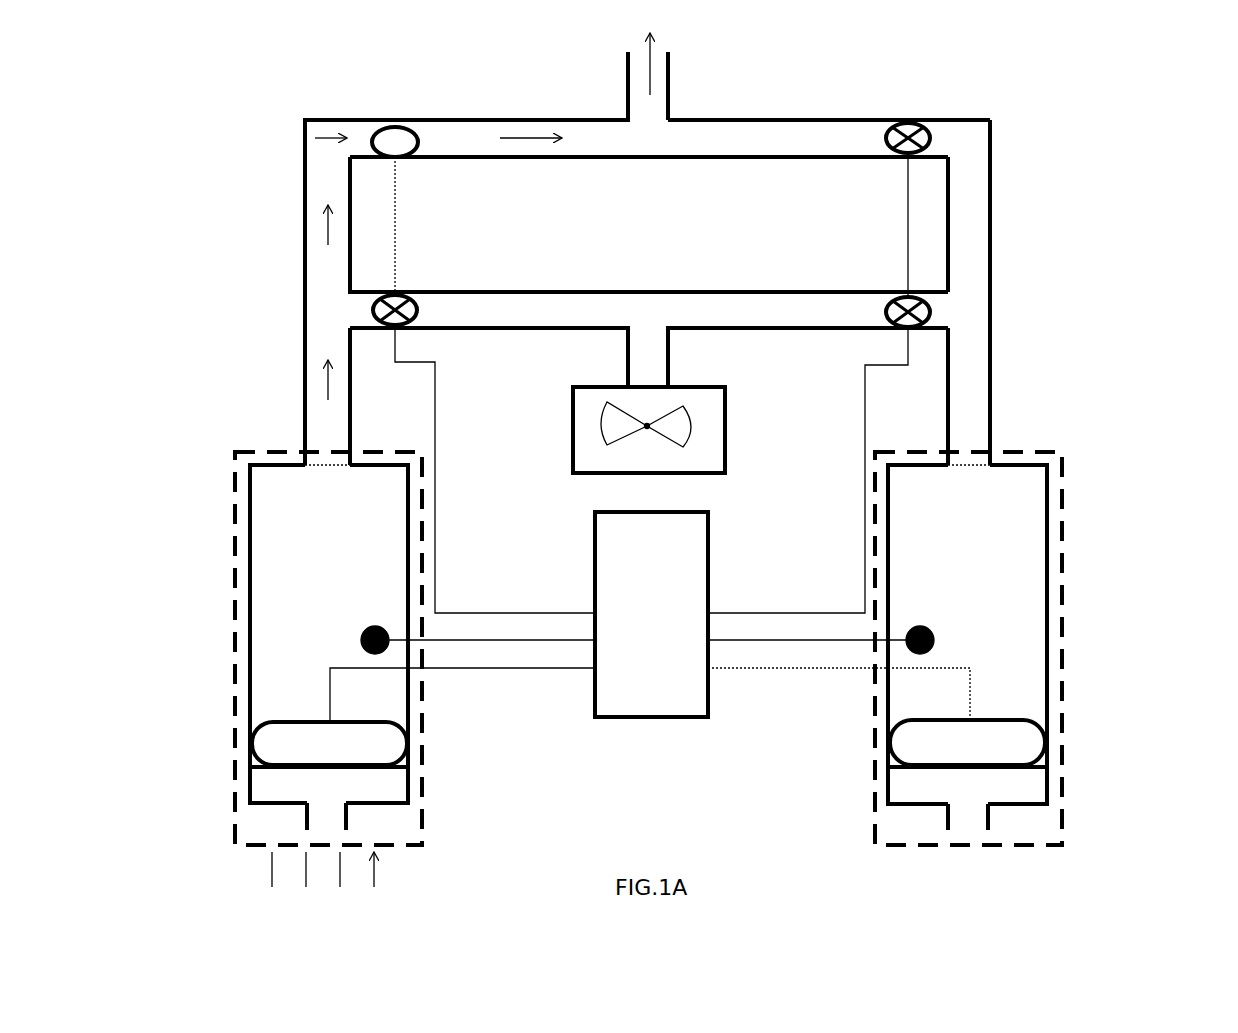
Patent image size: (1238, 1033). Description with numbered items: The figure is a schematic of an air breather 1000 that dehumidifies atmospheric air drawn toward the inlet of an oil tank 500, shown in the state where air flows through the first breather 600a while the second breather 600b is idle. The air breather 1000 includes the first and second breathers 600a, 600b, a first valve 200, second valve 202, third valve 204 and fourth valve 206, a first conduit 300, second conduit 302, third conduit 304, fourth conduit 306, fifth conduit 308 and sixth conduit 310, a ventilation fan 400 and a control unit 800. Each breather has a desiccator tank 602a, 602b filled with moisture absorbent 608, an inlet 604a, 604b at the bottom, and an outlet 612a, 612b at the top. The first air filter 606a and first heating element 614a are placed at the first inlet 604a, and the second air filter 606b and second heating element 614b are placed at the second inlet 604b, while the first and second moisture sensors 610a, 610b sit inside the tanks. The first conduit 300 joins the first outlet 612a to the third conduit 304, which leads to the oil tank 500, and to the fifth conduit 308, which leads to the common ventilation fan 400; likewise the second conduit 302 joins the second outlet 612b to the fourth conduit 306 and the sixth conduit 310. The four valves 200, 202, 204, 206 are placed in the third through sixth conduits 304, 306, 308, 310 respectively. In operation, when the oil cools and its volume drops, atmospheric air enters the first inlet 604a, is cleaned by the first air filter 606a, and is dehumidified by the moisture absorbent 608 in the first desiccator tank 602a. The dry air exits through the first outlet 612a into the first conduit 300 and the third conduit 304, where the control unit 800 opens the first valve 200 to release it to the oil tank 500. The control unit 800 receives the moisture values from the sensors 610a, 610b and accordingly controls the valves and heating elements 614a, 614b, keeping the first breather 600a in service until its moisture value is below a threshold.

The air breather 1000 is at (1099, 92).
The first valve 200 is at (368, 138).
The second valve 202 is at (935, 138).
The third valve 204 is at (418, 312).
The fourth valve 206 is at (885, 312).
The first conduit 300 is at (305, 283).
The second conduit 302 is at (992, 262).
The third conduit 304 is at (528, 118).
The fourth conduit 306 is at (783, 120).
The fifth conduit 308 is at (478, 292).
The sixth conduit 310 is at (795, 292).
The ventilation fan 400 is at (573, 397).
The oil tank 500 is at (670, 62).
The first breather 600a is at (235, 492).
The second breather 600b is at (1062, 472).
The first desiccator tank 602a is at (250, 583).
The second desiccator tank 602b is at (1050, 612).
The first inlet 604a is at (305, 818).
The second inlet 604b is at (990, 820).
The first air filter 606a is at (285, 790).
The second air filter 606b is at (1045, 803).
The moisture absorbent 608 is at (290, 654).
The first moisture sensor 610a is at (360, 640).
The second moisture sensor 610b is at (935, 640).
The first outlet 612a is at (325, 450).
The second outlet 612b is at (990, 463).
The first heating element 614a is at (275, 742).
The second heating element 614b is at (1025, 745).
The control unit 800 is at (637, 718).